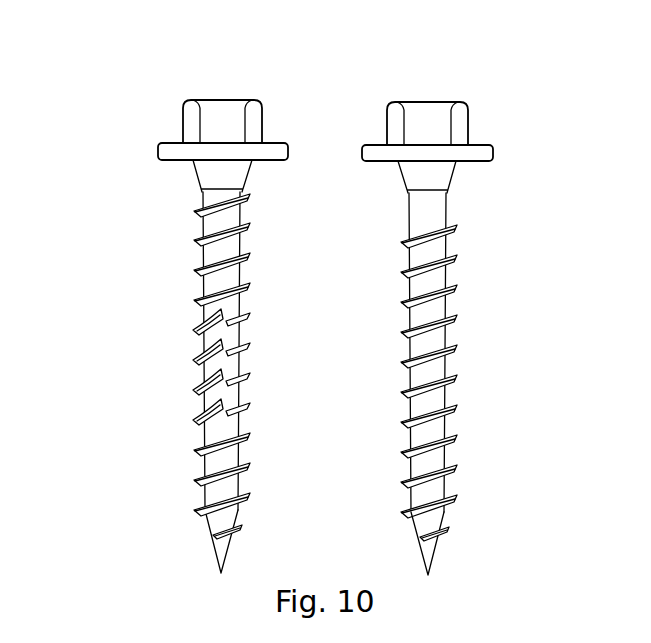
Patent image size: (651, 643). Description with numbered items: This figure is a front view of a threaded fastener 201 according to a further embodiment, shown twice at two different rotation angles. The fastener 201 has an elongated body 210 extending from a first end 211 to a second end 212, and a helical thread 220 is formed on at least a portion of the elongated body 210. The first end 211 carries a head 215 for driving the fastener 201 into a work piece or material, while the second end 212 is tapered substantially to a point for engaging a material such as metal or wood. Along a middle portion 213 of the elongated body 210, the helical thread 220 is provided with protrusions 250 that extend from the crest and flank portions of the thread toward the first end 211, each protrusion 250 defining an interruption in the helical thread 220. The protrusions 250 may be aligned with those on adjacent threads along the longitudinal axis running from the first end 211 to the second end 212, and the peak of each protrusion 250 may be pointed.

The fastener 201 is at (157, 116).
The head 215 is at (197, 128).
The first end 211 is at (481, 191).
The helical thread 220 is at (210, 226).
The elongated body 210 is at (453, 244).
The protrusion 250 is at (207, 314).
The middle portion 213 is at (166, 381).
The second end 212 is at (470, 530).